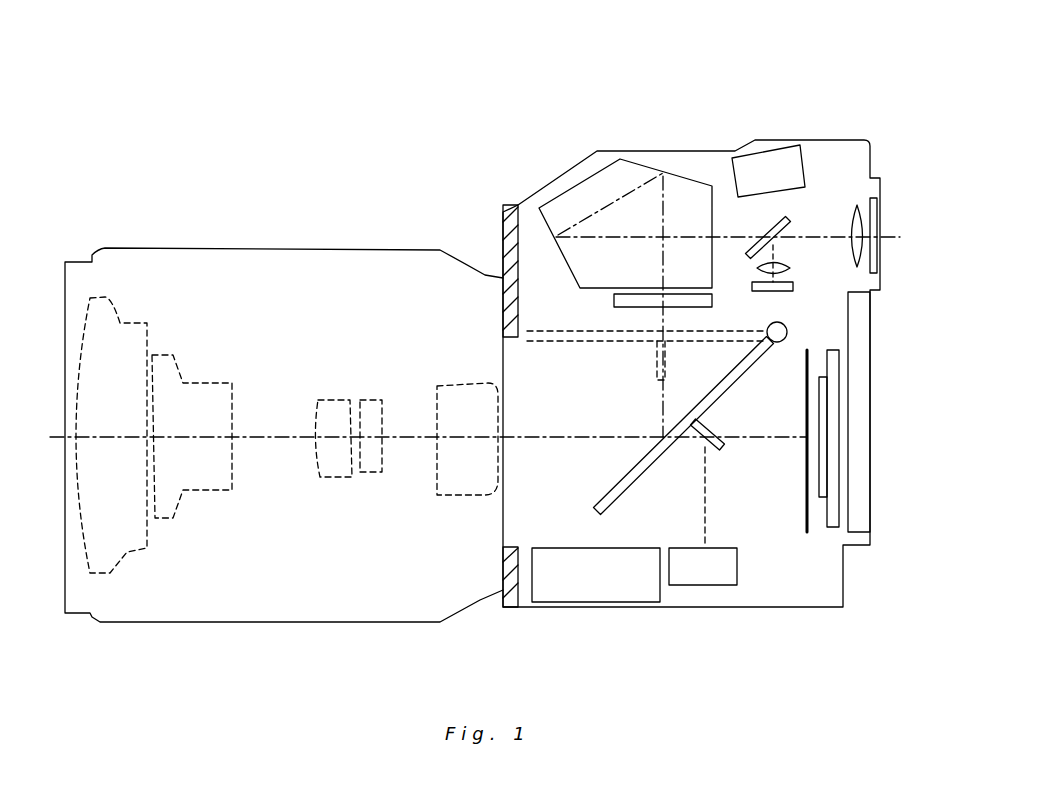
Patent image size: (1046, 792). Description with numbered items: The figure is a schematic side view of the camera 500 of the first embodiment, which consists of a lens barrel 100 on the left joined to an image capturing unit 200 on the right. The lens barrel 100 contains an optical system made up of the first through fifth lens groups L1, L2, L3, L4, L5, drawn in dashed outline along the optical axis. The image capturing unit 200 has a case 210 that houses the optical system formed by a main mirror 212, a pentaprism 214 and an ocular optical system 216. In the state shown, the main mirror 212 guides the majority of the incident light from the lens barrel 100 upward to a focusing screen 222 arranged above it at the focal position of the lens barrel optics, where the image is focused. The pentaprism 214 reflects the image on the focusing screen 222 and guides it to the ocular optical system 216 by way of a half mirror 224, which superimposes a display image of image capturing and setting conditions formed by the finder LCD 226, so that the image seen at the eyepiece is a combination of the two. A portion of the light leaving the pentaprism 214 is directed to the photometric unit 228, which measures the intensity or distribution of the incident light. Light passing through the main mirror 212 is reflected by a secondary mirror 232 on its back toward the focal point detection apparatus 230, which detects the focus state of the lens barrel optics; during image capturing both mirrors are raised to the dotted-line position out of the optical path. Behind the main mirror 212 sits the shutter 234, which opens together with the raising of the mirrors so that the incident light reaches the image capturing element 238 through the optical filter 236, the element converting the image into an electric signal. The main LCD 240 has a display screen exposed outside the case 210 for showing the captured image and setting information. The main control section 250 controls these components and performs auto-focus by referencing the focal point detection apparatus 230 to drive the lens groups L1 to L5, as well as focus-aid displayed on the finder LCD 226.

The camera 500 is at (828, 78).
The lens barrel 100 is at (285, 245).
The image capturing unit 200 is at (553, 160).
The case 210 is at (503, 212).
The main mirror 212 is at (608, 488).
The pentaprism 214 is at (607, 160).
The ocular optical system 216 is at (865, 210).
The focusing screen 222 is at (614, 298).
The half mirror 224 is at (788, 217).
The finder LCD 226 is at (795, 286).
The photometric unit 228 is at (765, 148).
The focal point detection apparatus 230 is at (700, 586).
The secondary mirror 232 is at (715, 445).
The shutter 234 is at (807, 532).
The optical filter 236 is at (822, 500).
The image capturing element 238 is at (841, 530).
The main LCD 240 is at (871, 330).
The main control section 250 is at (607, 603).
The first lens group L1 is at (128, 552).
The second lens group L2 is at (205, 490).
The third lens group L3 is at (327, 477).
The fourth lens group L4 is at (372, 472).
The fifth lens group L5 is at (455, 495).